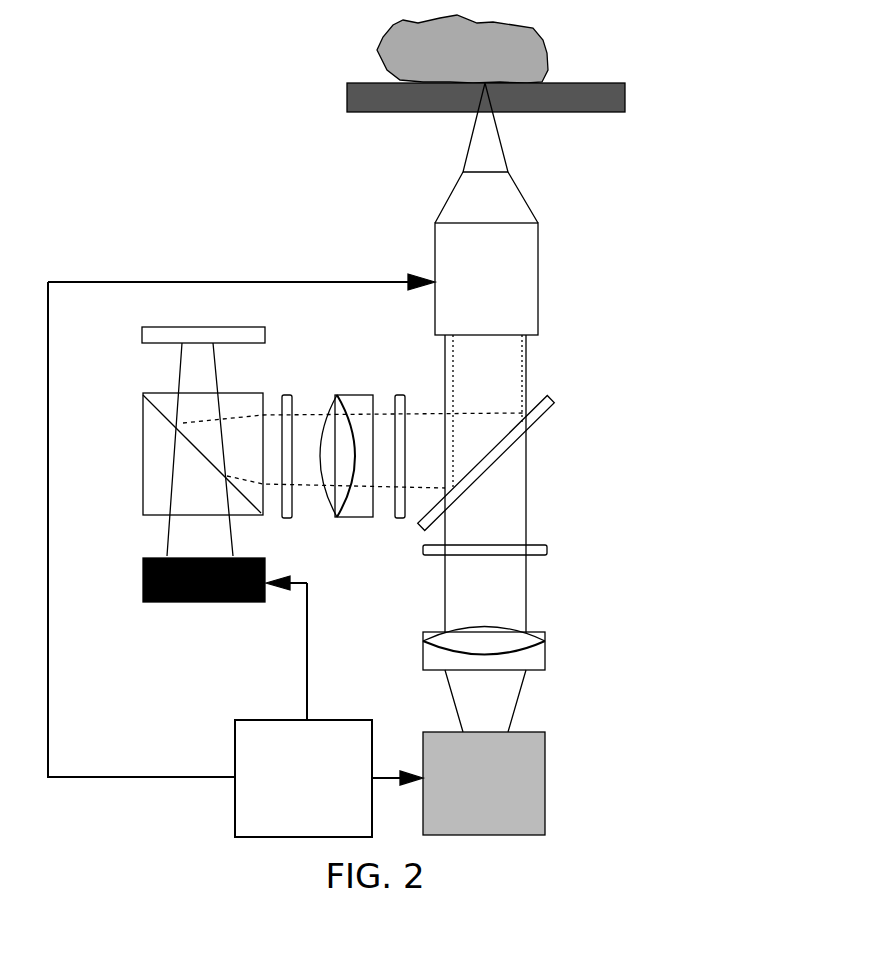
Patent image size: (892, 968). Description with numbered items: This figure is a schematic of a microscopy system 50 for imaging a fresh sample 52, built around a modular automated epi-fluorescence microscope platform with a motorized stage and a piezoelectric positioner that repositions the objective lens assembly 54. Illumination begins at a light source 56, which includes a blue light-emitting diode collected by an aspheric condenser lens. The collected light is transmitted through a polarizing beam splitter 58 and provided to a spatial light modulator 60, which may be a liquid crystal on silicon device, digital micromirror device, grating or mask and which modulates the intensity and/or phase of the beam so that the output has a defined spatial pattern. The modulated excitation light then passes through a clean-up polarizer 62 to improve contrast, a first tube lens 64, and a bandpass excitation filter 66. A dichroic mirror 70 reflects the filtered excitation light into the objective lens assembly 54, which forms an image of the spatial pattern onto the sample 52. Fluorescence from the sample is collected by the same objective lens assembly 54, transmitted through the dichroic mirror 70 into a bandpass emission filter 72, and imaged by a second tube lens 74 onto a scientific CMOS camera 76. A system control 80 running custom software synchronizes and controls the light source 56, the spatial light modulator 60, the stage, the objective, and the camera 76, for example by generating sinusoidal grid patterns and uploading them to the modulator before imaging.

The microscopy system 50 is at (660, 150).
The fresh sample 52 is at (462, 49).
The objective lens assembly 54 is at (538, 290).
The light source 56 is at (263, 563).
The polarizing beam splitter 58 is at (170, 393).
The spatial light modulator 60 is at (212, 327).
The clean-up polarizer 62 is at (288, 394).
The first tube lens 64 is at (342, 394).
The bandpass excitation filter 66 is at (401, 394).
The dichroic mirror 70 is at (545, 416).
The bandpass emission filter 72 is at (547, 546).
The second tube lens 74 is at (545, 650).
The scientific CMOS camera 76 is at (523, 732).
The system control 80 is at (333, 720).